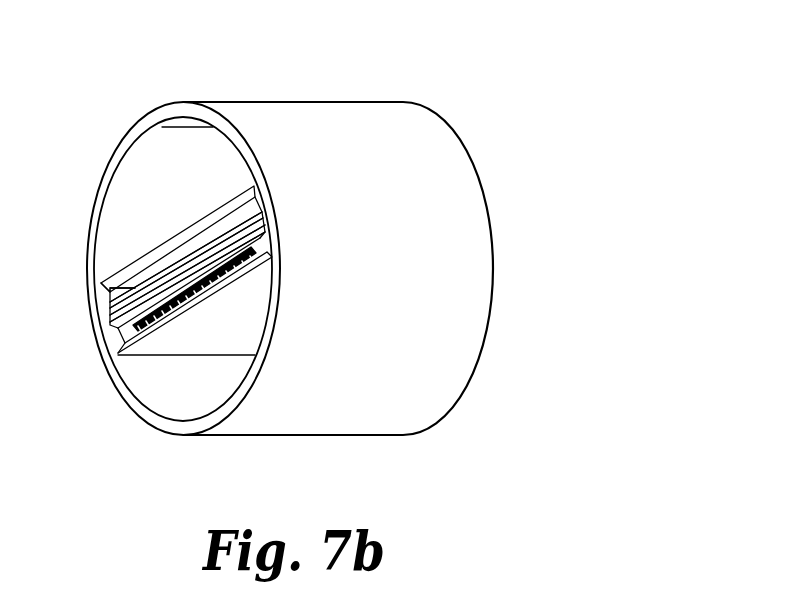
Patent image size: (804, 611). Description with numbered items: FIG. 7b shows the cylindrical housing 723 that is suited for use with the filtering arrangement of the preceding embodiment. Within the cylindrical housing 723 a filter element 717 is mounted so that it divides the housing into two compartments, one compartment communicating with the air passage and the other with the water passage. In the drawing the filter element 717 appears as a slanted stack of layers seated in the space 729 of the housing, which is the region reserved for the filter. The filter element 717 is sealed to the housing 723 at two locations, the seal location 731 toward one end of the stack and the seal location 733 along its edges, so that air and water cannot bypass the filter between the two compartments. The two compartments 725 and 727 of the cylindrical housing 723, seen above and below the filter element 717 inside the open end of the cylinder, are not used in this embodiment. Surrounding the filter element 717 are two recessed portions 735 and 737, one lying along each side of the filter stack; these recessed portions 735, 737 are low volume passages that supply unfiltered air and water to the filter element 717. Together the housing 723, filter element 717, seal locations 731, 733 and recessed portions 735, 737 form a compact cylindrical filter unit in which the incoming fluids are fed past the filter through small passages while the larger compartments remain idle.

The cylindrical housing 723 is at (378, 98).
The compartment 725 is at (132, 180).
The compartment 727 is at (176, 393).
The space 729 is at (211, 231).
The seal location 731 is at (265, 213).
The seal location 733 is at (110, 305).
The filter element 717 is at (109, 317).
The recessed portion 735 is at (118, 353).
The recessed portion 737 is at (120, 283).